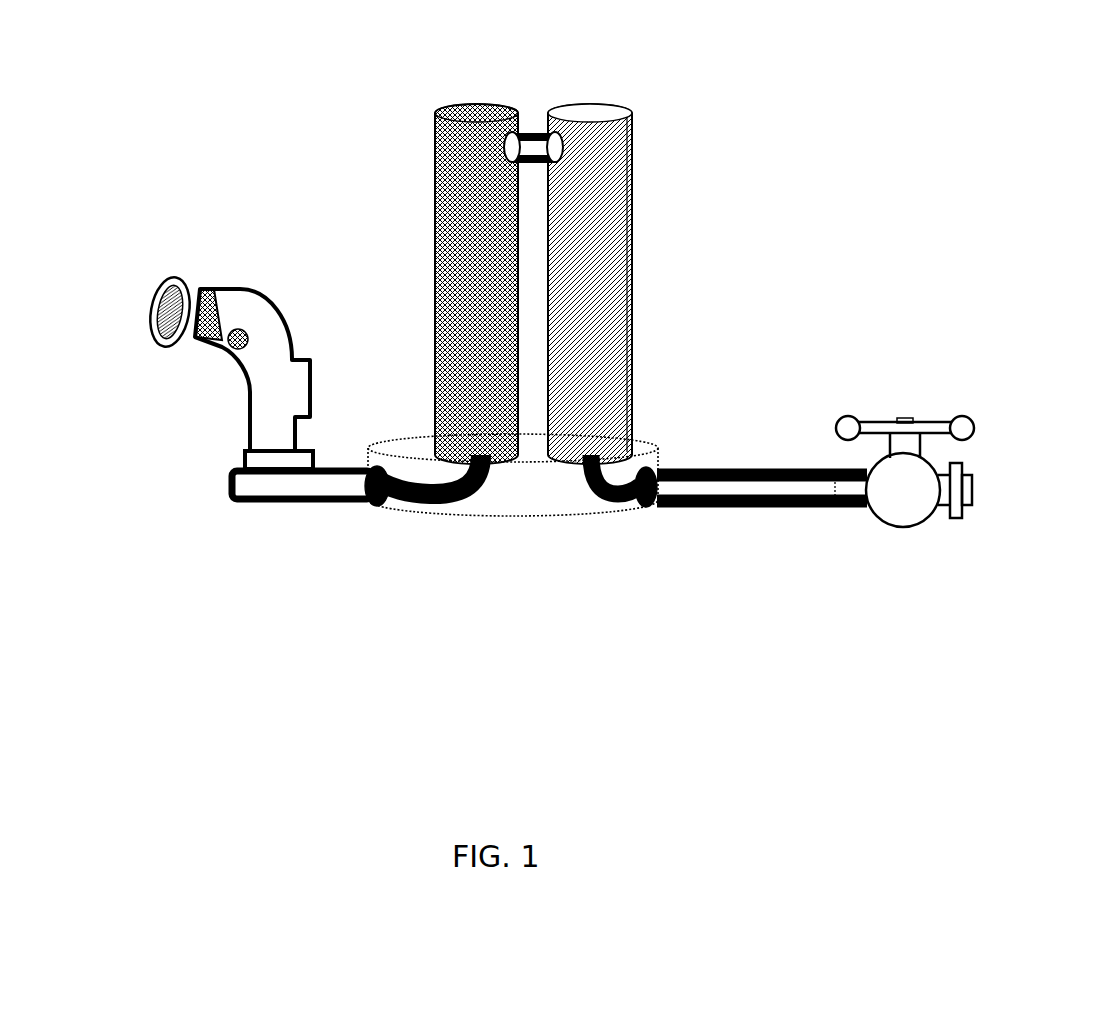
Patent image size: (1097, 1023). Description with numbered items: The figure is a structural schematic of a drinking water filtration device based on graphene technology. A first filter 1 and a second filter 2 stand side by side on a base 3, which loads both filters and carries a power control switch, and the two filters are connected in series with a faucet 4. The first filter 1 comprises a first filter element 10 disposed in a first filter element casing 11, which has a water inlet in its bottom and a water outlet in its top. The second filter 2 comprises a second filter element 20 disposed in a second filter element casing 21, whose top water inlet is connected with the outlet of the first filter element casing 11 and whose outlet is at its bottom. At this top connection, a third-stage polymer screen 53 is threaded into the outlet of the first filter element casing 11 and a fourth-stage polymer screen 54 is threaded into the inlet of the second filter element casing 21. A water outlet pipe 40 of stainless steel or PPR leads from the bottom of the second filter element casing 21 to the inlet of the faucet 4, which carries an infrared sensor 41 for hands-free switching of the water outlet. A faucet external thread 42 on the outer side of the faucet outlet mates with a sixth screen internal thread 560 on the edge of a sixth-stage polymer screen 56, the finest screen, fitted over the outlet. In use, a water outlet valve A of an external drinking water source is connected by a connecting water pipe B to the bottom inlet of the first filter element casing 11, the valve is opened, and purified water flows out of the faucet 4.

The first filter 1 is at (610, 223).
The first filter element 10 is at (612, 367).
The first filter element casing 11 is at (630, 287).
The second filter 2 is at (452, 215).
The second filter element 20 is at (457, 365).
The second filter element casing 21 is at (440, 283).
The base 3 is at (558, 510).
The water outlet pipe 40 is at (418, 500).
The faucet 4 is at (279, 427).
The infrared sensor 41 is at (228, 350).
The faucet external thread 42 is at (222, 293).
The third-stage polymer screen 53 is at (553, 147).
The fourth-stage polymer screen 54 is at (512, 147).
The sixth-stage polymer screen 56 is at (162, 325).
The sixth screen internal thread 560 is at (159, 306).
The water outlet valve A is at (903, 450).
The connecting water pipe B is at (763, 488).